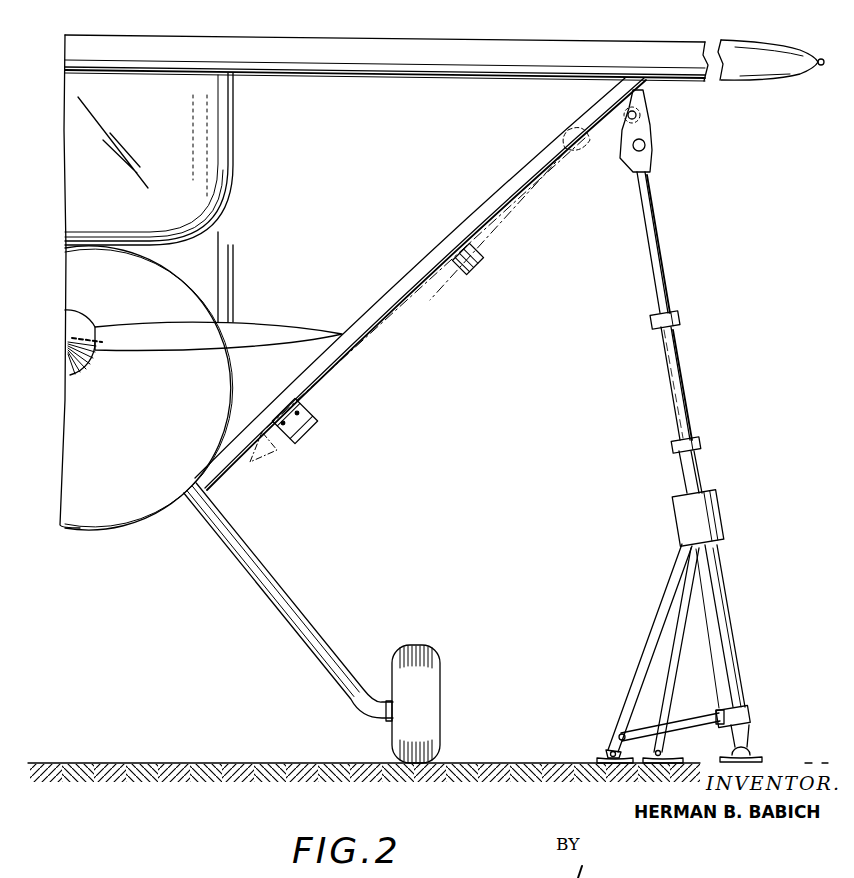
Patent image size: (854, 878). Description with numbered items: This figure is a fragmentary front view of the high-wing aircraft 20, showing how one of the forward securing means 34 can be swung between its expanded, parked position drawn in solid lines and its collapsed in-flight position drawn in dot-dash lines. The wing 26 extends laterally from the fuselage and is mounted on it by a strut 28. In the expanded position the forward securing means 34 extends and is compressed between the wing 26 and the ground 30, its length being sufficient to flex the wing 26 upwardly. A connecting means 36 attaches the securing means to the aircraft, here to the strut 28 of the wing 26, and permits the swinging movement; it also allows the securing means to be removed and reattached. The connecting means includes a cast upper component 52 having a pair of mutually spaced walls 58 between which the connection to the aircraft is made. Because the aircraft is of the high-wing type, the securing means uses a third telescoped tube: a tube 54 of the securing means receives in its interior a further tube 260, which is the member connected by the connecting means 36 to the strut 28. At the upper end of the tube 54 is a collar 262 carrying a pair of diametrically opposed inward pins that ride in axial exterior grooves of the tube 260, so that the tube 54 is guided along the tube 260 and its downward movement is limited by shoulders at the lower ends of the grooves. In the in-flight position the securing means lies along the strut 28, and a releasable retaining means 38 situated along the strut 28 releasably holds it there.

The aircraft 20 is at (118, 537).
The wing 26 is at (578, 30).
The strut 28 is at (397, 285).
The ground 30 is at (523, 762).
The forward securing means 34 is at (677, 467).
The connecting means 36 is at (650, 122).
The releasable retaining means 38 is at (307, 438).
The upper component 52 is at (622, 158).
The tube 54 is at (668, 378).
The walls 58 is at (647, 140).
The further tube 260 is at (656, 236).
The collar 262 is at (651, 320).